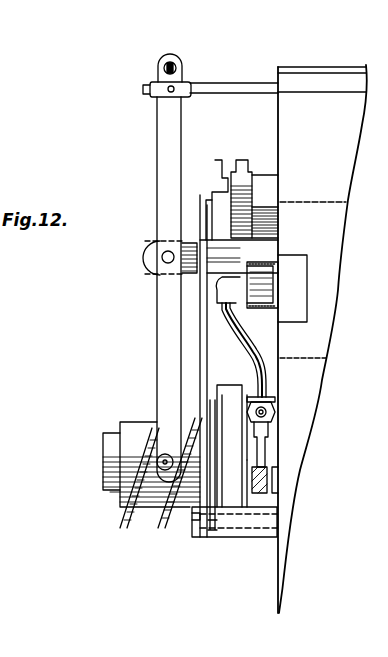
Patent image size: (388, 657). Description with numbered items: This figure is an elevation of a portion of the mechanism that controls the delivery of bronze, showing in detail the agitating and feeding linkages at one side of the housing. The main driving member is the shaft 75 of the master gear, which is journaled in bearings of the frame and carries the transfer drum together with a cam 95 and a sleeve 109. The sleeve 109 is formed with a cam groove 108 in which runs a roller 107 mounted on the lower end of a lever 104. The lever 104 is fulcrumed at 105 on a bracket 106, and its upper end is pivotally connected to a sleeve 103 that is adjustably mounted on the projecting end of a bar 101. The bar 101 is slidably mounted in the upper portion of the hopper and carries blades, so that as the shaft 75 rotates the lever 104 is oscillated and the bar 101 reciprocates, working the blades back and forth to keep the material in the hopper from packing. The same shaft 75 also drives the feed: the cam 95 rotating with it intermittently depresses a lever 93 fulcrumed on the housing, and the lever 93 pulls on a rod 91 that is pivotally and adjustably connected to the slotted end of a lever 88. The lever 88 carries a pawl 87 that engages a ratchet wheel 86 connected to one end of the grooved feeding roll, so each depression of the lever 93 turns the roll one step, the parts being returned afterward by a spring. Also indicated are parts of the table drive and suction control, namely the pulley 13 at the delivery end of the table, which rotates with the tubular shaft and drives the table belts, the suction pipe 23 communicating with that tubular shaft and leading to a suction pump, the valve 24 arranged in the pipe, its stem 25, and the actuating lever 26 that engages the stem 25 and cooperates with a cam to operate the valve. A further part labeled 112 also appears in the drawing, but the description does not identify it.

The pulley 13 is at (262, 285).
The suction pipe 23 is at (268, 350).
The valve 24 is at (275, 412).
The stem 25 is at (263, 448).
The actuating lever 26 is at (272, 480).
The shaft 75 is at (112, 440).
The ratchet wheel 86 is at (238, 194).
The pawl 87 is at (240, 157).
The lever 88 is at (212, 167).
The rod 91 is at (202, 325).
The lever 93 is at (227, 540).
The cam 95 is at (228, 385).
The bar 101 is at (225, 88).
The sleeve 103 is at (157, 83).
The lever 104 is at (160, 157).
The fulcrum 105 is at (165, 257).
The bracket 106 is at (258, 250).
The roller 107 is at (168, 513).
The cam groove 108 is at (130, 530).
The sleeve 109 is at (130, 450).
The block 112 is at (300, 255).